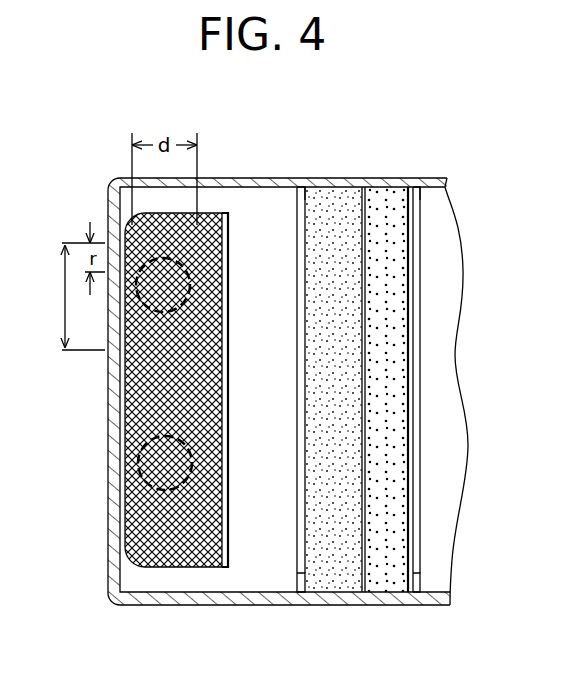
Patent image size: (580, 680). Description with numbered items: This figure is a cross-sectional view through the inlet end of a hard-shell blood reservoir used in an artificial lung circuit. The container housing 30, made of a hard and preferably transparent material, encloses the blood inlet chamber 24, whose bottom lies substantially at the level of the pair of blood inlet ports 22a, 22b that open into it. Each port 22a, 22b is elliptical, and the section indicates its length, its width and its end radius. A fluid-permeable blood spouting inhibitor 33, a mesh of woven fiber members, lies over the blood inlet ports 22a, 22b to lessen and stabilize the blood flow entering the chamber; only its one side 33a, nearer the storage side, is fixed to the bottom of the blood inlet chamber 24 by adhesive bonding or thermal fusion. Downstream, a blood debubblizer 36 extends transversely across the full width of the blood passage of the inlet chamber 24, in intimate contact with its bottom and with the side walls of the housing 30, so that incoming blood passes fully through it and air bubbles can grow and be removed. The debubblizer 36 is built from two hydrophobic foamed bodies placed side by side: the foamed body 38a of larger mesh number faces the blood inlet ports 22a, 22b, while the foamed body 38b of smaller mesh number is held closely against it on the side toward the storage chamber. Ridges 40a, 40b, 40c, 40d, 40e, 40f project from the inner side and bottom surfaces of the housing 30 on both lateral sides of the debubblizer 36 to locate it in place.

The container housing 30 is at (378, 178).
The blood inlet chamber 24 is at (268, 580).
The blood debubblizer 36 is at (359, 178).
The ridge 40a is at (304, 585).
The ridge 40b is at (297, 312).
The ridge 40c is at (303, 192).
The ridge 40d is at (416, 588).
The ridge 40e is at (414, 312).
The ridge 40f is at (414, 200).
The foamed body 38a is at (330, 588).
The foamed body 38b is at (410, 490).
The blood spouting inhibitor 33 is at (172, 568).
The side of blood spouting inhibitor 33a is at (229, 416).
The blood inlet port 22a is at (128, 482).
The blood inlet port 22b is at (105, 363).